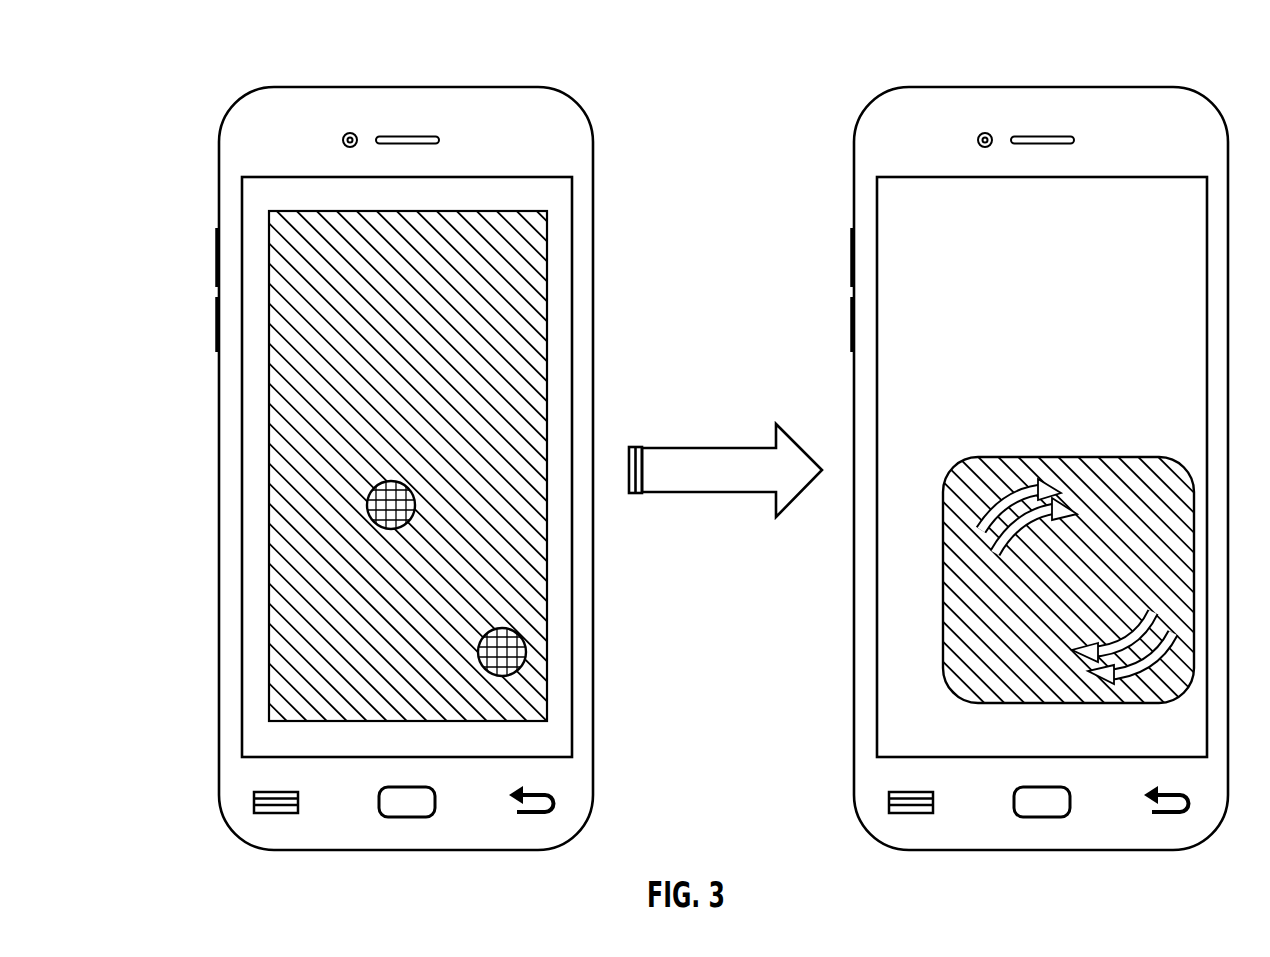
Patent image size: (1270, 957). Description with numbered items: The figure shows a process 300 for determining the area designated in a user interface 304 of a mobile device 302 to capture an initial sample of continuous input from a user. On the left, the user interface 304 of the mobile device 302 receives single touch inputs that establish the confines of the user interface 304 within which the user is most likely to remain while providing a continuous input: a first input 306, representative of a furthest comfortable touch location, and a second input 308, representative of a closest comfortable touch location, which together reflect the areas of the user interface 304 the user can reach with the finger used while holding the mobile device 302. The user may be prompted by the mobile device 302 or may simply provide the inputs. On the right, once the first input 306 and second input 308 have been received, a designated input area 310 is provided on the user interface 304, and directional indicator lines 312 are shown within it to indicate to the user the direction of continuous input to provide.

The process 300 is at (192, 49).
The mobile device 302 is at (239, 101).
The user interface 304 is at (308, 252).
The first input 306 is at (367, 507).
The second input 308 is at (528, 654).
The designated input area 310 is at (1003, 642).
The directional indicator lines 312 is at (1086, 653).